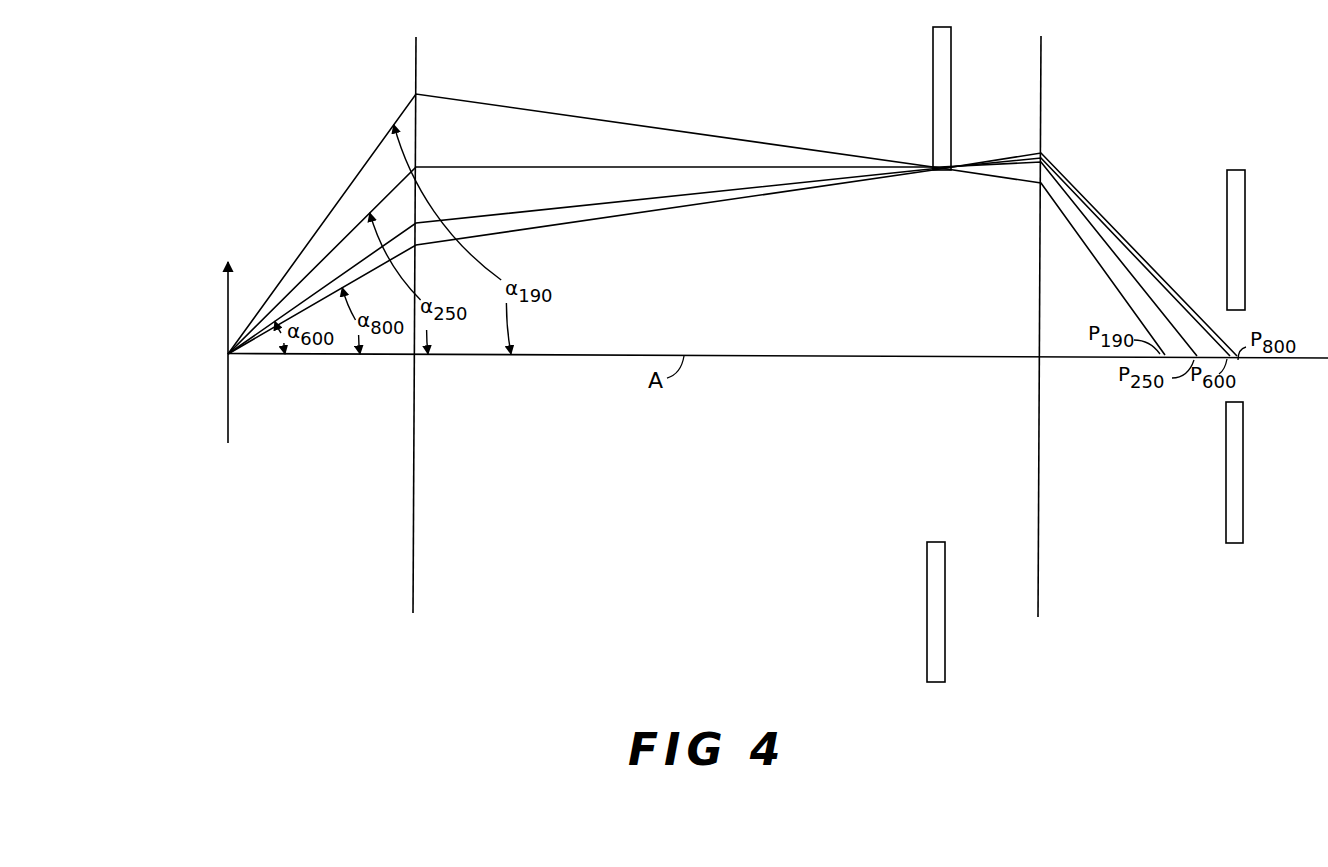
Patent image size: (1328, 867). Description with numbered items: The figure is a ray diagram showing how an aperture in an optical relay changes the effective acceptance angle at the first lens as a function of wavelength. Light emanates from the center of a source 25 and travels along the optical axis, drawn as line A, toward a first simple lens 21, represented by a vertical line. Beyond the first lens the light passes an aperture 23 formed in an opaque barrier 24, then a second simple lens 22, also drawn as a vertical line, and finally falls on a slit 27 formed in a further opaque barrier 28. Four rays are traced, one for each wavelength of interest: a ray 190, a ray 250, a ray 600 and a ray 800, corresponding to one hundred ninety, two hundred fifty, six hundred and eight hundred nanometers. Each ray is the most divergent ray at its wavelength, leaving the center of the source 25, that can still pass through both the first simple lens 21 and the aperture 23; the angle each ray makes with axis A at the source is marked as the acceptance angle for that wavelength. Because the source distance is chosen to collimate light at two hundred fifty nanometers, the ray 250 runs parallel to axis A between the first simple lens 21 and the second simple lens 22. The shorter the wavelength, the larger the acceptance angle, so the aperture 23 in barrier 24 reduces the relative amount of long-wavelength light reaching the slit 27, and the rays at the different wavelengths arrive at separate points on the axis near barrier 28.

The first simple lens 21 is at (413, 541).
The second simple lens 22 is at (1038, 511).
The aperture 23 is at (953, 219).
The opaque barrier 24 is at (951, 63).
The source 25 is at (230, 411).
The slit 27 is at (1234, 328).
The opaque barrier 28 is at (1246, 221).
The light ray at 190 nanometers 190 is at (561, 103).
The light ray at 250 nanometers 250 is at (563, 167).
The light ray at 600 nanometers 600 is at (569, 211).
The light ray at 800 nanometers 800 is at (581, 221).